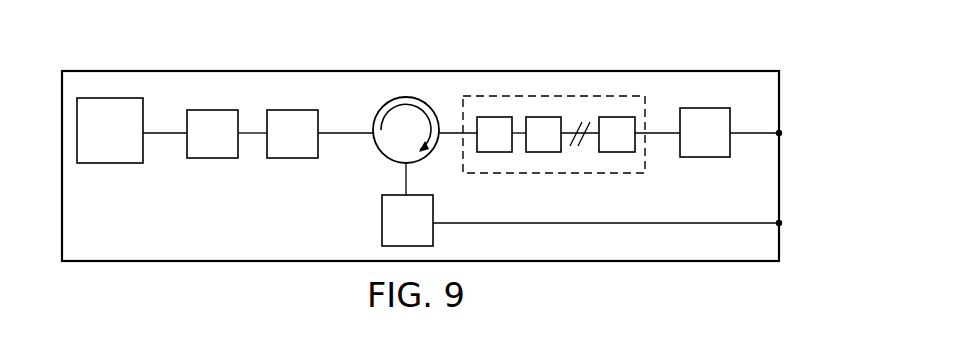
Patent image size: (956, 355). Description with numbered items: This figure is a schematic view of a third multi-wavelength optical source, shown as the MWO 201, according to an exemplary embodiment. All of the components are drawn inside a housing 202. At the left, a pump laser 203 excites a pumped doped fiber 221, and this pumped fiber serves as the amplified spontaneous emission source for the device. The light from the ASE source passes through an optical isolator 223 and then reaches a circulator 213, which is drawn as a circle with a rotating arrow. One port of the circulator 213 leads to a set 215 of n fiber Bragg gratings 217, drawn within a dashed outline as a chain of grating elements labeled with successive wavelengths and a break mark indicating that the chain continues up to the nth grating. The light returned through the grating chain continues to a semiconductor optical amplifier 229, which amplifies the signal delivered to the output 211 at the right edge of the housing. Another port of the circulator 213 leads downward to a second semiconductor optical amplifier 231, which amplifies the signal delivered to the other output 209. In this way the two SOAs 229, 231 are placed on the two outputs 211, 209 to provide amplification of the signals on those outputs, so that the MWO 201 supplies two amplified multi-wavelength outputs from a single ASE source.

The multi-wavelength optical source (MWO) 201 is at (110, 53).
The housing 202 is at (212, 262).
The pump laser 203 is at (128, 141).
The pumped doped fiber 221 is at (232, 144).
The optical isolator 223 is at (312, 144).
The circulator 213 is at (425, 141).
The set of fiber Bragg gratings 215 is at (632, 96).
The fiber Bragg grating 217 is at (610, 117).
The semiconductor optical amplifier (SOA) 229 is at (724, 143).
The output 211 is at (781, 132).
The semiconductor optical amplifier (SOA) 231 is at (426, 229).
The output 209 is at (781, 222).